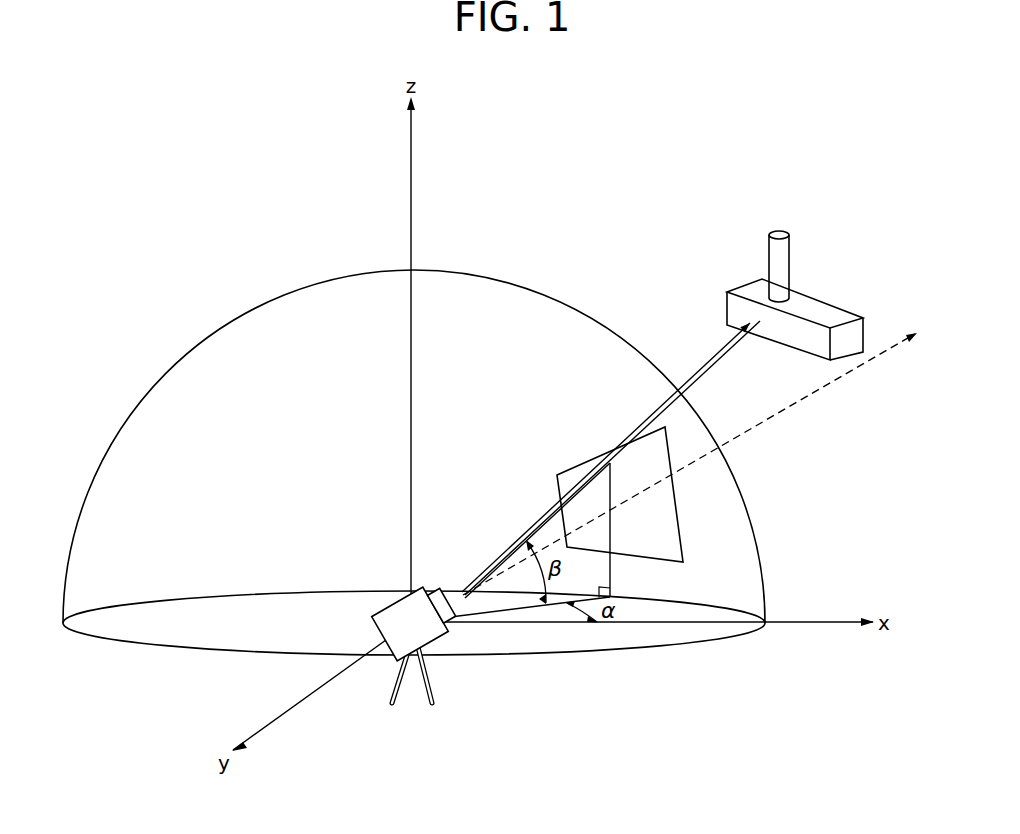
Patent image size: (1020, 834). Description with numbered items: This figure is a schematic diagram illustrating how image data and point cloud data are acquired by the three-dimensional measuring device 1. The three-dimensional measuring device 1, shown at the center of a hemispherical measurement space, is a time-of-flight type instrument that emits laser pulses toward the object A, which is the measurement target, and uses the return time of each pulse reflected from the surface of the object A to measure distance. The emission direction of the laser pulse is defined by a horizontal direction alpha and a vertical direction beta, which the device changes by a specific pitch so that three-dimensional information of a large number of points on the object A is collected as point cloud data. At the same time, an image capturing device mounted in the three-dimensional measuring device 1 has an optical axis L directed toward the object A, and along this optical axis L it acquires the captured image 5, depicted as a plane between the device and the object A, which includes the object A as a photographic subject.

The three-dimensional measuring device 1 is at (402, 608).
The captured image 5 is at (657, 531).
The object A is at (828, 256).
The optical axis L is at (699, 457).